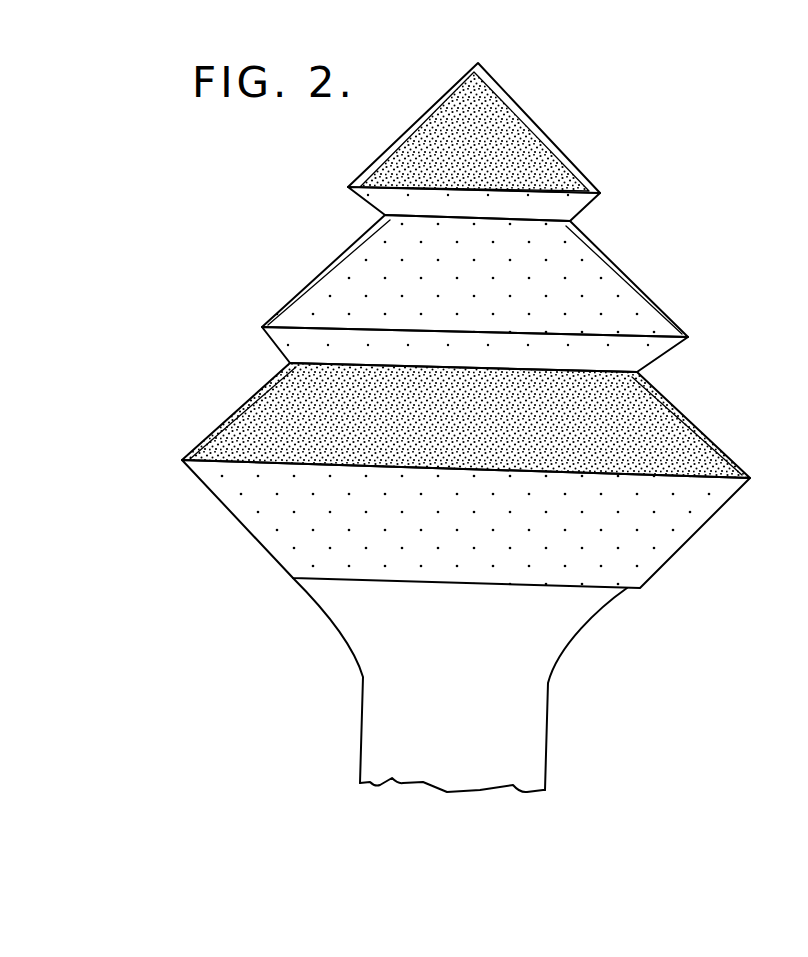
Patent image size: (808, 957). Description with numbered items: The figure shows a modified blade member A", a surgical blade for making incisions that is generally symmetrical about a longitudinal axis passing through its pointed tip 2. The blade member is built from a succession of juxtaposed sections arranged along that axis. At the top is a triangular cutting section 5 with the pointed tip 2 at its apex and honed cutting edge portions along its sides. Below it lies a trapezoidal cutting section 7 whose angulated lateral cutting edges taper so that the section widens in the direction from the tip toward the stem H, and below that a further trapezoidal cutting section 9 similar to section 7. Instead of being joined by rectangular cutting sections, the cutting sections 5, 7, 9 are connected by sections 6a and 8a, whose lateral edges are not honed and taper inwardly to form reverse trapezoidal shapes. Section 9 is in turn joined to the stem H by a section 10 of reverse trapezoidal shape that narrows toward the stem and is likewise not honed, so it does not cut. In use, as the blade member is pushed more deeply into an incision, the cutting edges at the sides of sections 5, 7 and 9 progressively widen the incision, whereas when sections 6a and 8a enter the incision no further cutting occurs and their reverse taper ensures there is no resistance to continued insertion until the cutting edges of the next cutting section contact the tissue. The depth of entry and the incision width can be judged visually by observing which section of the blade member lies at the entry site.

The pointed tip 2 is at (479, 61).
The triangular cutting section 5 is at (500, 140).
The reverse trapezoidal connecting section 6a is at (577, 207).
The trapezoidal cutting section 7 is at (610, 295).
The reverse trapezoidal connecting section 8a is at (302, 345).
The trapezoidal cutting section 9 is at (643, 420).
The reverse trapezoidal section 10 is at (293, 528).
The stem H is at (537, 712).
The blade member A is at (288, 214).